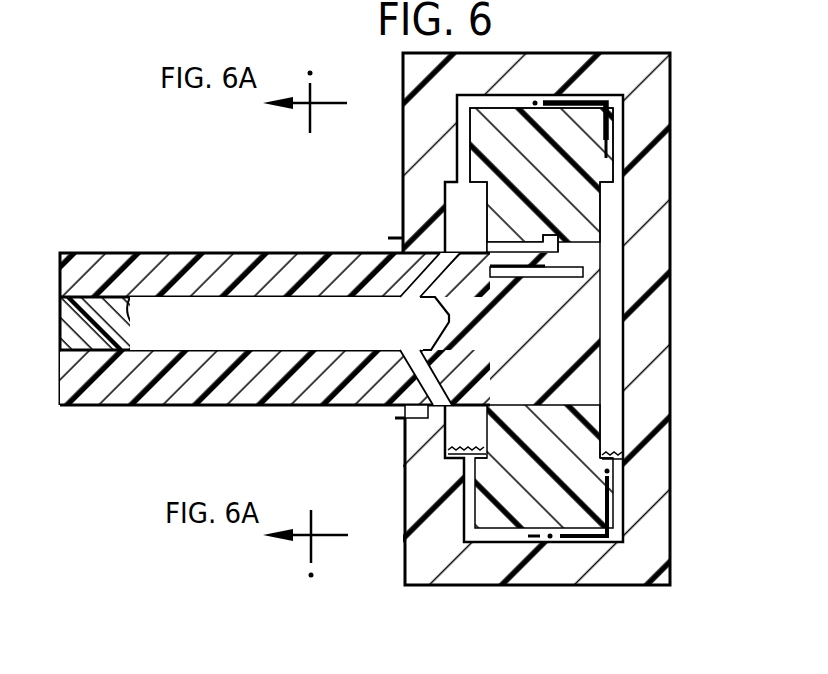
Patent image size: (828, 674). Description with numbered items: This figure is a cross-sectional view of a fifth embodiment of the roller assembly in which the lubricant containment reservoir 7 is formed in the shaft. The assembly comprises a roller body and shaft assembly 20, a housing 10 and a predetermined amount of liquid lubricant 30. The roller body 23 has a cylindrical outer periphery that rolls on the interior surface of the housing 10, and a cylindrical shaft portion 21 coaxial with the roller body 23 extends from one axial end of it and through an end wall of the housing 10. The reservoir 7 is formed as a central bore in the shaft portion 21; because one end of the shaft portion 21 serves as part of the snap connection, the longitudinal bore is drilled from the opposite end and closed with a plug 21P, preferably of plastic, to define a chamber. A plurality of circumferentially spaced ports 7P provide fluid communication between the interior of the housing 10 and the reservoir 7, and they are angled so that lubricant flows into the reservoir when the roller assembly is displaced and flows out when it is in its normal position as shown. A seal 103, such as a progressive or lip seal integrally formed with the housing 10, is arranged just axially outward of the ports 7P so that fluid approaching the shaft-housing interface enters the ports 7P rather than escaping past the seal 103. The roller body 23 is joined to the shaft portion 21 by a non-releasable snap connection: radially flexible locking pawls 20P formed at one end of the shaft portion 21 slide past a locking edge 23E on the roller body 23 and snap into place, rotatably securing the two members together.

The housing 10 is at (655, 152).
The roller body and shaft assembly 20 is at (178, 407).
The shaft portion 21 is at (147, 272).
The plug 21P is at (70, 318).
The lubricant containment reservoir 7 is at (236, 332).
The ports 7P is at (418, 329).
The locking pawls 20P is at (547, 238).
The roller body 23 is at (556, 486).
The locking edge 23E is at (538, 231).
The liquid lubricant 30 is at (603, 457).
The seal 103 is at (407, 414).